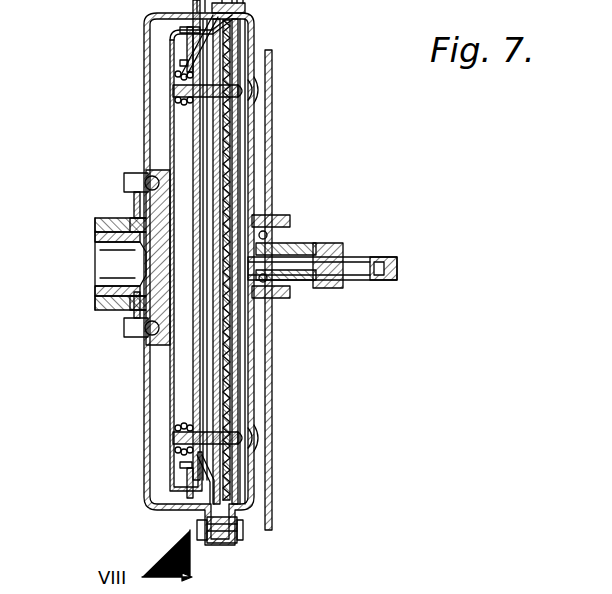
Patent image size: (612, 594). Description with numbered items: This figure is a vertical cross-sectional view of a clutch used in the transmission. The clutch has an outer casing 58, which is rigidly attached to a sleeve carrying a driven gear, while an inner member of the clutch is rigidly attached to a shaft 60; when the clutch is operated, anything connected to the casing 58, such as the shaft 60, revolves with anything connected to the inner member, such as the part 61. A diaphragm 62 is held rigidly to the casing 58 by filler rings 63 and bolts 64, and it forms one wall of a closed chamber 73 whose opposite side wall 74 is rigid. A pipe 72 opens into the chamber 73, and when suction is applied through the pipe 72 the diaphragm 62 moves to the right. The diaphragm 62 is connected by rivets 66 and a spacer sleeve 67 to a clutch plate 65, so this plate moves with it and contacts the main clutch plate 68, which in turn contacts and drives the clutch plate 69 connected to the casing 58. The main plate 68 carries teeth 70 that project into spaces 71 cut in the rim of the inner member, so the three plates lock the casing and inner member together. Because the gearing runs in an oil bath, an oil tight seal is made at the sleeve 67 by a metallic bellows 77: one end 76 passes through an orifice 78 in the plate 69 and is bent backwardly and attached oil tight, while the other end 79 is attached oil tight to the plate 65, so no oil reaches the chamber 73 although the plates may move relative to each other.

The outer casing 58 is at (144, 435).
The shaft 60 is at (104, 262).
The connected element 61 is at (122, 310).
The diaphragm 62 is at (232, 137).
The filler rings 63 is at (222, 544).
The bolts 64 is at (250, 530).
The clutch plate 65 is at (172, 490).
The rivets 66 is at (230, 82).
The spacer sleeve 67 is at (233, 72).
The main clutch plate 68 is at (190, 498).
The clutch plate 69 is at (205, 352).
The teeth 70 is at (186, 42).
The spaces 71 is at (162, 30).
The pipe 72 is at (356, 262).
The closed chamber 73 is at (266, 182).
The rigid side wall 74 is at (267, 476).
The bellows end 76 is at (240, 462).
The metallic bellows 77 is at (190, 108).
The orifice 78 is at (238, 370).
The bellows end 79 is at (176, 426).